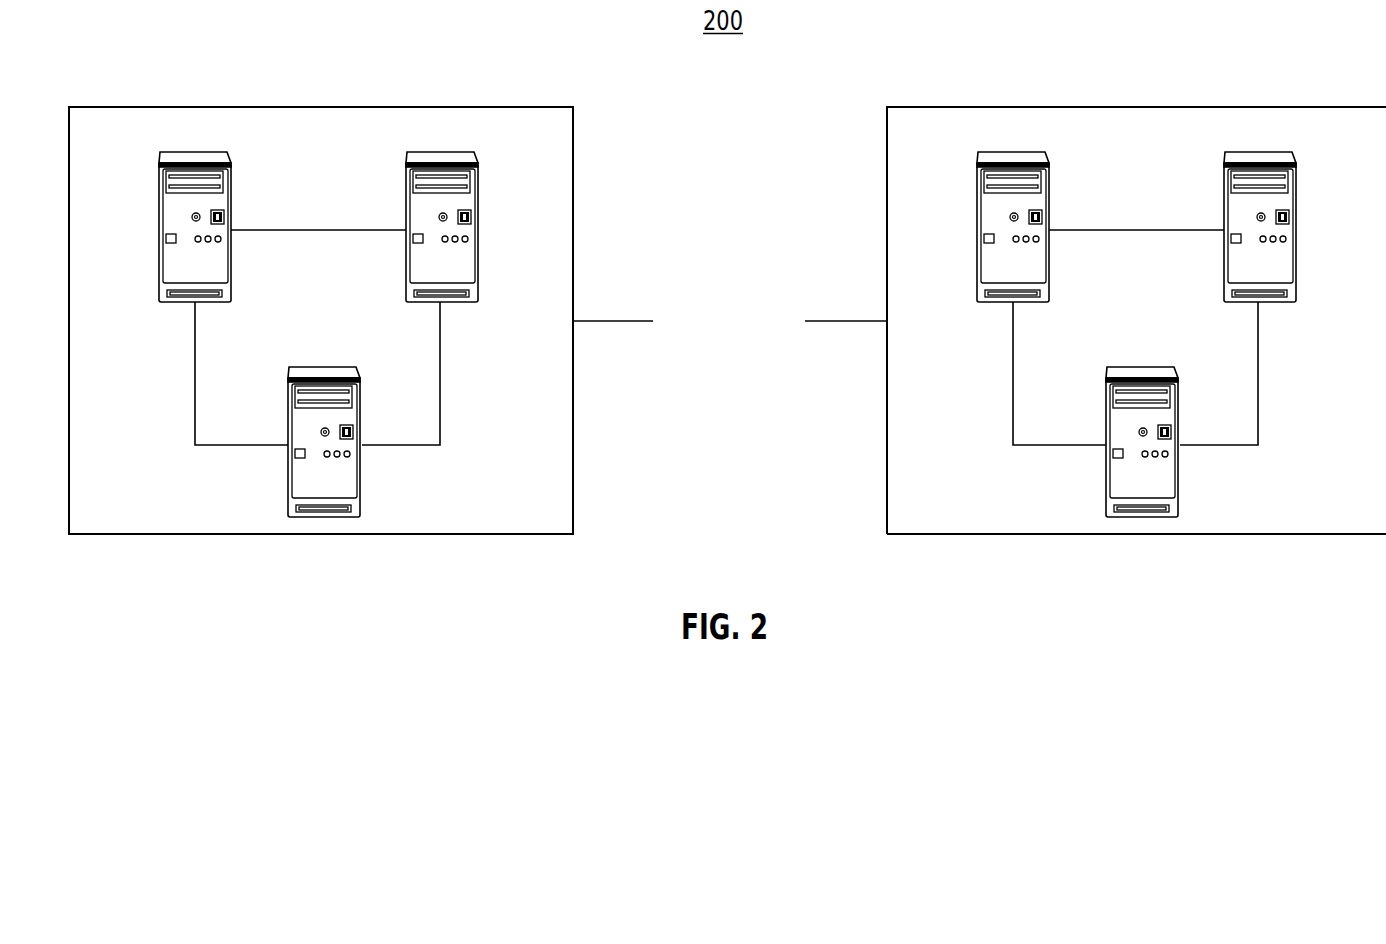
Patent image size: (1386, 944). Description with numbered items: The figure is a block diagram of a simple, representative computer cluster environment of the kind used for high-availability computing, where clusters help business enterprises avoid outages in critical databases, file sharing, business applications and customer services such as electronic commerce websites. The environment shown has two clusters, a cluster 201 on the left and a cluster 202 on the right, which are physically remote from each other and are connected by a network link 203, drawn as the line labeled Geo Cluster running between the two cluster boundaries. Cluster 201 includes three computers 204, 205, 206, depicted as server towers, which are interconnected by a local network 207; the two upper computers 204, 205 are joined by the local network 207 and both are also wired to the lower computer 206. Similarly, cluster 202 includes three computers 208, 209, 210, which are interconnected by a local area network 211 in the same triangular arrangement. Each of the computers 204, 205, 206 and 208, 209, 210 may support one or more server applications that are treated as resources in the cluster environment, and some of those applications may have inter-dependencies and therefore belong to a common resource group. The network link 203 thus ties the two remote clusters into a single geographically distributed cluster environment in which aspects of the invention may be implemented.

The cluster 201 is at (435, 107).
The cluster 202 is at (1253, 107).
The network link 203 is at (614, 321).
The computer 204 is at (158, 232).
The computer 205 is at (479, 232).
The computer 206 is at (362, 488).
The local network 207 is at (313, 230).
The computer 208 is at (977, 232).
The computer 209 is at (1297, 232).
The computer 210 is at (1180, 488).
The local area network 211 is at (1131, 230).